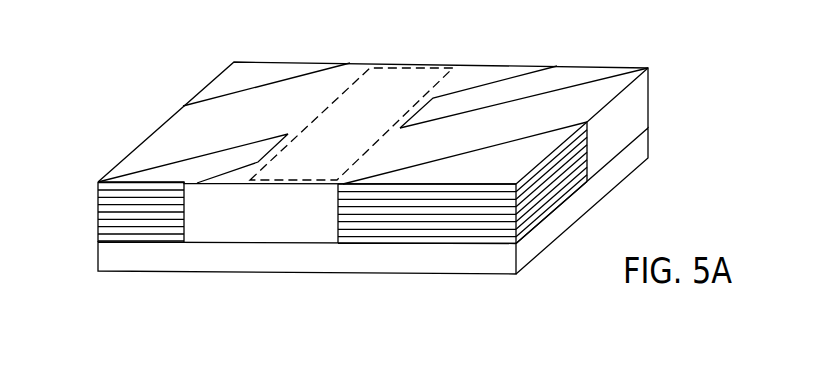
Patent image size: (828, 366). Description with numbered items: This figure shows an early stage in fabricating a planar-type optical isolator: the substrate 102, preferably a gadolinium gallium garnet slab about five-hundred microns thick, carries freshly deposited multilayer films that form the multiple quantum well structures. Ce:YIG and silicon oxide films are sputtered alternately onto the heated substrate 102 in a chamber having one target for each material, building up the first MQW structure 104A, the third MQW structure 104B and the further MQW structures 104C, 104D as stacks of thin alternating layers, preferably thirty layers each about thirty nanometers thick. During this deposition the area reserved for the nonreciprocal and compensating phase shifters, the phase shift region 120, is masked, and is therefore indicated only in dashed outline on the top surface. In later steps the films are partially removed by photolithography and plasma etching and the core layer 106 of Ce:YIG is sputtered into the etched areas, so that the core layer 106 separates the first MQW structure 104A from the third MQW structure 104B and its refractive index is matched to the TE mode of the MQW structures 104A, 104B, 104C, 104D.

The substrate 102 is at (488, 259).
The core layer 106 is at (170, 132).
The first MQW structure 104A is at (158, 173).
The third MQW structure 104B is at (502, 153).
The MQW structure 104C is at (233, 73).
The MQW structure 104D is at (578, 75).
The phase shift region 120 is at (331, 73).